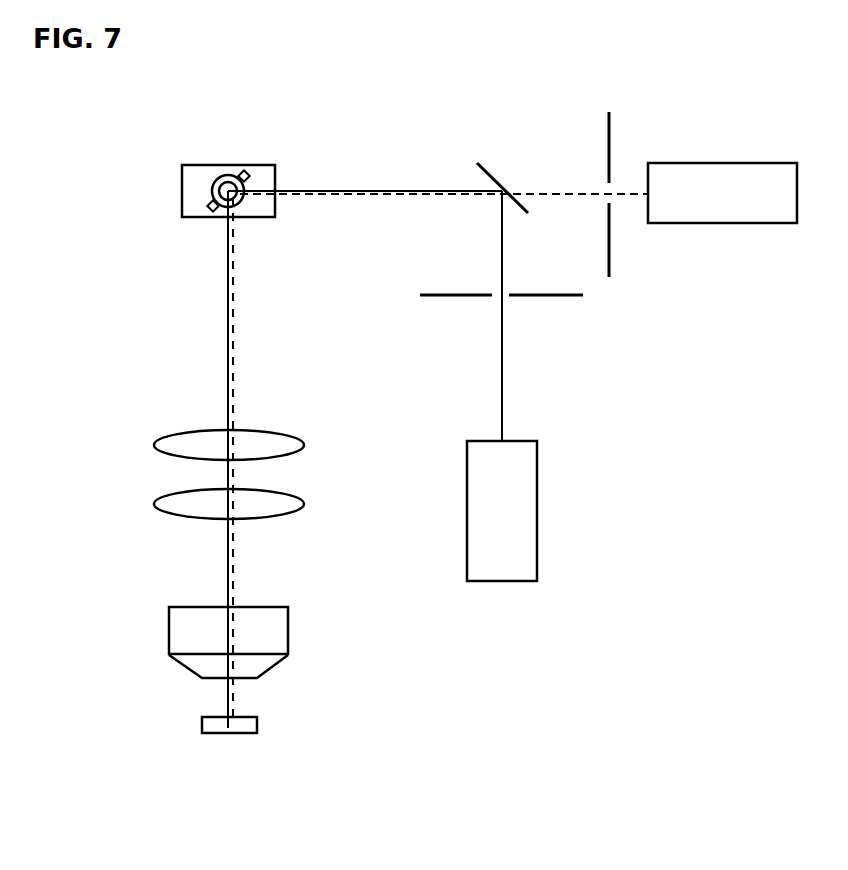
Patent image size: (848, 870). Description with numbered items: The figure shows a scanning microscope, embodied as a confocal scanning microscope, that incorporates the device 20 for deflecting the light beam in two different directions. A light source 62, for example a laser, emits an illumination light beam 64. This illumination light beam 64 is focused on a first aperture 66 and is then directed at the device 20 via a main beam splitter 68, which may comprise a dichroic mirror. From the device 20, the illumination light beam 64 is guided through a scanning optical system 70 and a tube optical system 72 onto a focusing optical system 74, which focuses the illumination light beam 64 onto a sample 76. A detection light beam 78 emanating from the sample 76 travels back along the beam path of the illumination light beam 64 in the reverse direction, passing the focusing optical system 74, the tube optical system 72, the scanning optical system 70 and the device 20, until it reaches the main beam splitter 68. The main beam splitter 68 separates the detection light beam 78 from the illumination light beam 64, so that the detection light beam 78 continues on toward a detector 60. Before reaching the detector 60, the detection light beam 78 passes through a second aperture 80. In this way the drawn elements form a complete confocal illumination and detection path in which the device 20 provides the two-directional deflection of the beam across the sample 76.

The device for deflecting the light beam 20 is at (275, 178).
The detector 60 is at (704, 172).
The light source 62 is at (517, 503).
The illumination light beam 64 is at (501, 334).
The first aperture 66 is at (545, 297).
The main beam splitter 68 is at (490, 173).
The scanning optical system 70 is at (175, 446).
The tube optical system 72 is at (175, 505).
The focusing optical system 74 is at (183, 634).
The sample 76 is at (210, 727).
The detection light beam 78 is at (549, 193).
The second aperture 80 is at (613, 128).